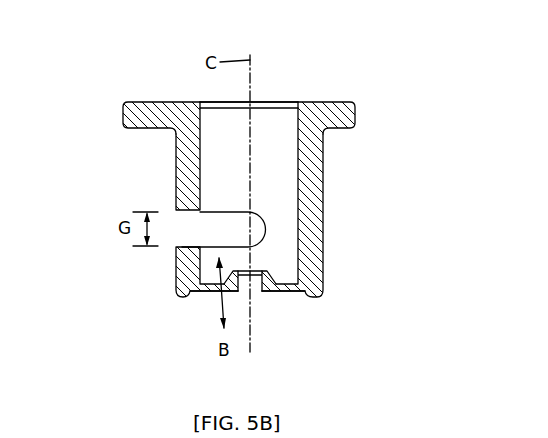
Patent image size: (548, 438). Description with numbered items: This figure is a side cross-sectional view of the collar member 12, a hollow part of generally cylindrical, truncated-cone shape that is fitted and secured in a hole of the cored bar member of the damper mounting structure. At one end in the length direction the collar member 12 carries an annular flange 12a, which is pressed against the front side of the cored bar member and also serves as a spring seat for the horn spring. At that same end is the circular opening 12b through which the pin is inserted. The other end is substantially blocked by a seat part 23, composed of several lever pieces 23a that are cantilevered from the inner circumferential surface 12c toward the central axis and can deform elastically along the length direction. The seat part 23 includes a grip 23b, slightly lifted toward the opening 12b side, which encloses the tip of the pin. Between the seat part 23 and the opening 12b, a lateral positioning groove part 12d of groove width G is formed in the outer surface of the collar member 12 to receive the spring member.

The collar member 12 is at (251, 223).
The annular flange 12a is at (357, 118).
The circular opening 12b is at (288, 108).
The inner circumferential surface 12c is at (290, 253).
The positioning groove part 12d is at (205, 219).
The seat part 23 is at (256, 290).
The lever piece 23a is at (288, 291).
The grip 23b is at (268, 270).